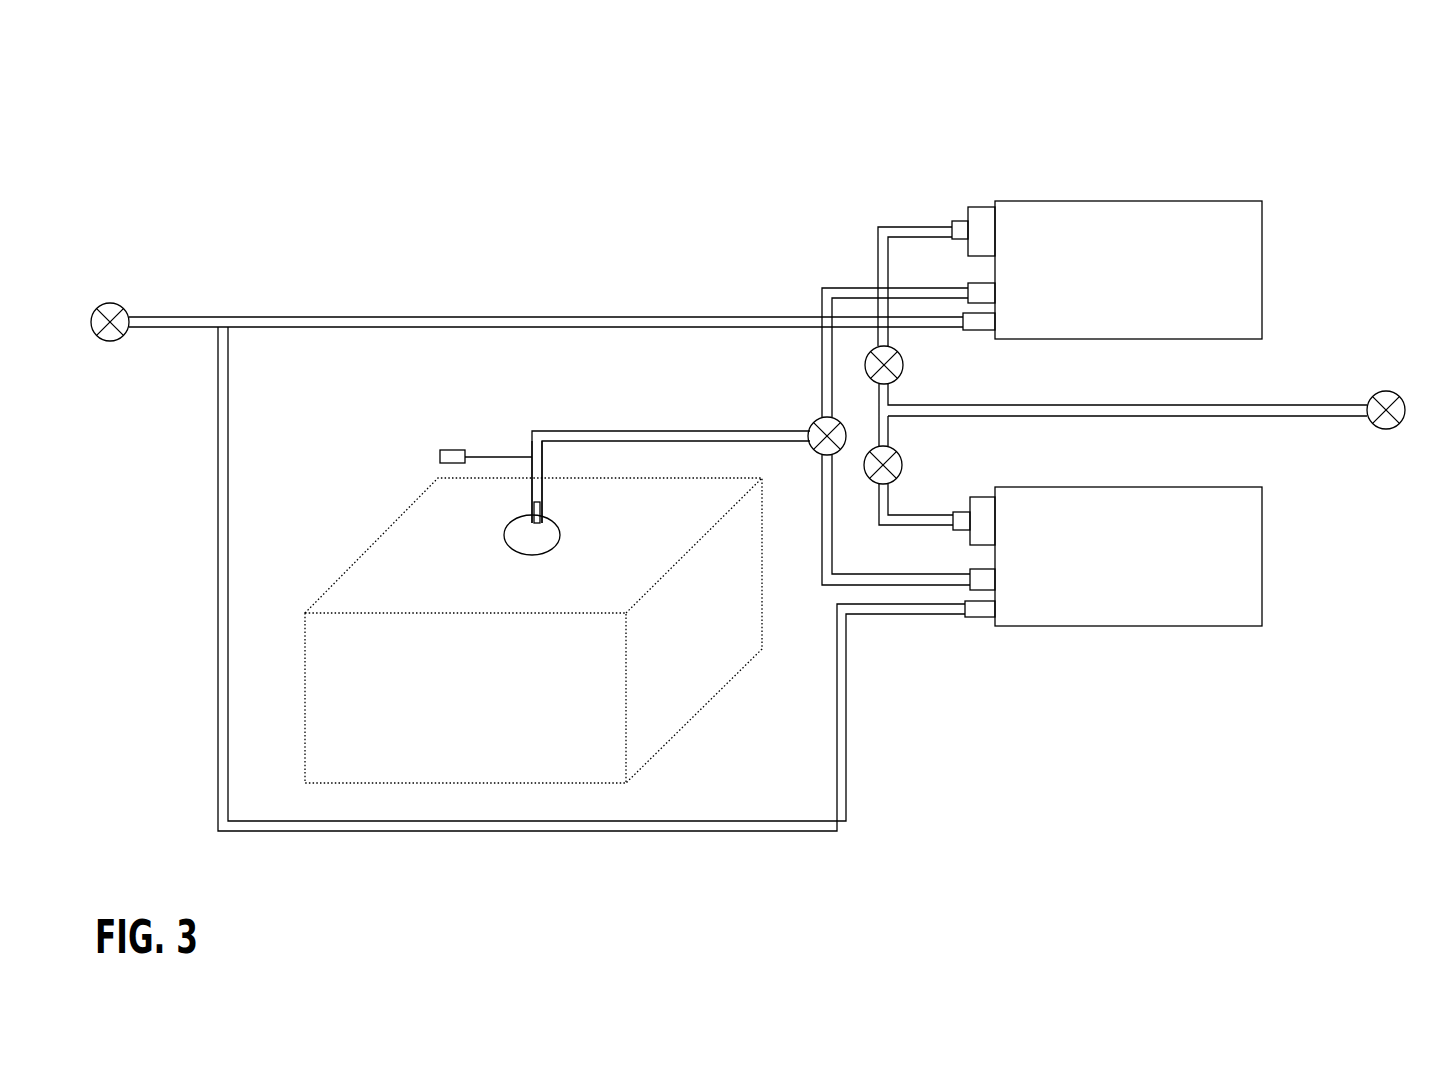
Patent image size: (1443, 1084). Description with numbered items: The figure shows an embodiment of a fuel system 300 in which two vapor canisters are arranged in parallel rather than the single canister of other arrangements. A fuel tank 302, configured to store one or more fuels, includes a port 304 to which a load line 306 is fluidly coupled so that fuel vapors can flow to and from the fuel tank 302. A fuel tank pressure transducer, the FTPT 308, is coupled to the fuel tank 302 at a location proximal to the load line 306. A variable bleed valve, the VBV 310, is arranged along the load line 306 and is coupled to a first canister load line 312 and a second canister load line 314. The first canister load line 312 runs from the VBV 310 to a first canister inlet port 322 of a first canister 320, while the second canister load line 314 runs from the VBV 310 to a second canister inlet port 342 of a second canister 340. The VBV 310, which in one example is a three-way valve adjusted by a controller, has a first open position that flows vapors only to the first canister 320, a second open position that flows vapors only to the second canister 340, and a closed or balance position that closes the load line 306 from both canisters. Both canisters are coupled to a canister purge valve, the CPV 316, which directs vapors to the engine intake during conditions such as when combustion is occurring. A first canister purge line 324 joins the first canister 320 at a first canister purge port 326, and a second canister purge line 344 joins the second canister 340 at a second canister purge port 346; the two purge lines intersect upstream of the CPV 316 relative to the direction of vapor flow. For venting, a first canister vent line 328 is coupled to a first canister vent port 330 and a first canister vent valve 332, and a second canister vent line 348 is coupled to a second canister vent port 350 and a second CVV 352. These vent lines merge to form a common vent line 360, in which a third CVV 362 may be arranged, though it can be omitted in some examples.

The fuel system 300 is at (1356, 70).
The fuel tank 302 is at (356, 560).
The port 304 is at (550, 548).
The load line 306 is at (622, 430).
The FTPT 308 is at (440, 450).
The variable bleed valve 310 is at (813, 423).
The first canister load line 312 is at (822, 285).
The second canister load line 314 is at (823, 585).
The CPV 316 is at (108, 302).
The first canister 320 is at (1180, 201).
The first canister inlet port 322 is at (995, 292).
The first canister purge line 324 is at (472, 315).
The first canister purge port 326 is at (995, 320).
The first canister vent line 328 is at (878, 227).
The first canister vent port 330 is at (975, 207).
The first canister vent valve 332 is at (903, 366).
The second canister 340 is at (1195, 487).
The second canister inlet port 342 is at (995, 580).
The second canister purge line 344 is at (218, 655).
The second canister purge port 346 is at (995, 606).
The second canister vent line 348 is at (900, 527).
The second canister vent port 350 is at (985, 497).
The second CVV 352 is at (903, 463).
The common vent line 360 is at (1017, 404).
The third CVV 362 is at (1378, 393).